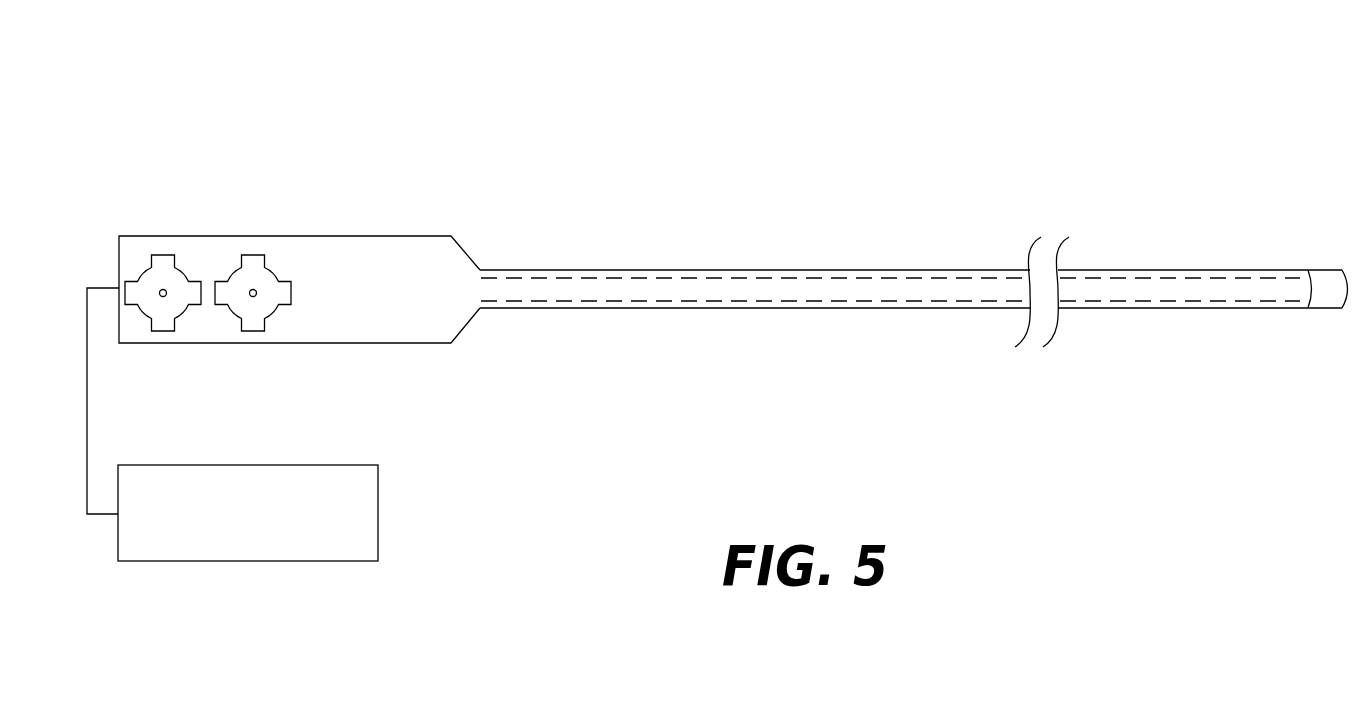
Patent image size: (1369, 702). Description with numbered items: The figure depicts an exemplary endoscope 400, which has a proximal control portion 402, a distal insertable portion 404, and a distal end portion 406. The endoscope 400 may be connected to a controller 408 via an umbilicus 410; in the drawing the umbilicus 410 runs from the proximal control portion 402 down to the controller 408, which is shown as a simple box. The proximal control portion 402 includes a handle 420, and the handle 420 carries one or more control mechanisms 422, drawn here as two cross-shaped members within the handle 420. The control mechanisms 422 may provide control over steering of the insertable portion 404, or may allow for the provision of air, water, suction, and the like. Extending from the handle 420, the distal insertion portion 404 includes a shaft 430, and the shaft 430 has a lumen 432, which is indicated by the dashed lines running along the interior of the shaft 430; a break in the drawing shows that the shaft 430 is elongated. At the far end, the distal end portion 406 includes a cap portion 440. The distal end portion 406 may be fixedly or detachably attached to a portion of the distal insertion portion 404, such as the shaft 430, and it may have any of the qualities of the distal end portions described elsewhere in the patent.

The endoscope 400 is at (798, 109).
The proximal control portion 402 is at (116, 213).
The distal insertable portion 404 is at (910, 325).
The distal end portion 406 is at (1342, 309).
The controller 408 is at (378, 497).
The umbilicus 410 is at (87, 400).
The handle 420 is at (300, 236).
The control mechanisms 422 is at (163, 255).
The shaft 430 is at (730, 270).
The lumen 432 is at (790, 293).
The cap portion 440 is at (1320, 270).